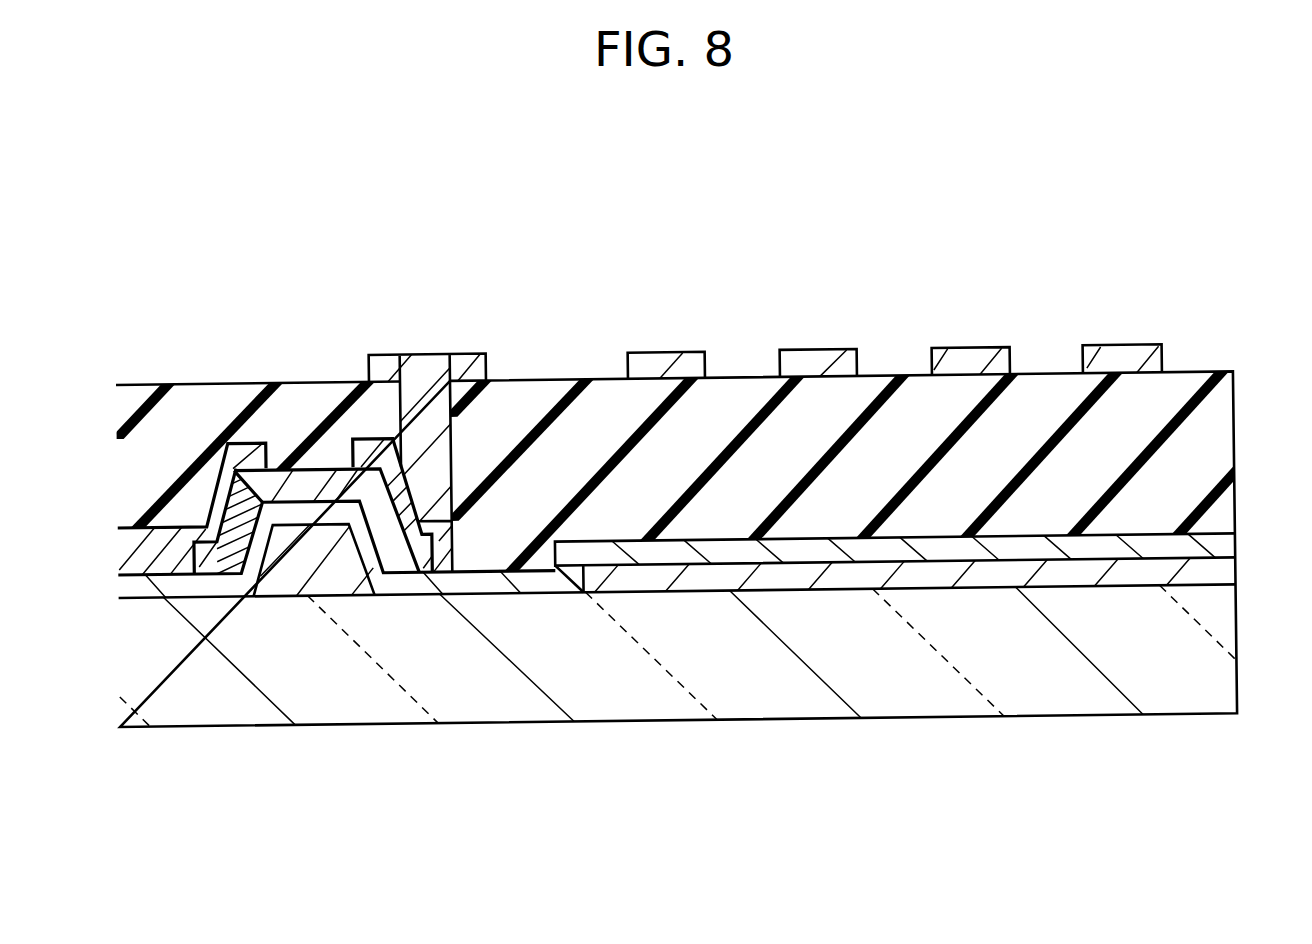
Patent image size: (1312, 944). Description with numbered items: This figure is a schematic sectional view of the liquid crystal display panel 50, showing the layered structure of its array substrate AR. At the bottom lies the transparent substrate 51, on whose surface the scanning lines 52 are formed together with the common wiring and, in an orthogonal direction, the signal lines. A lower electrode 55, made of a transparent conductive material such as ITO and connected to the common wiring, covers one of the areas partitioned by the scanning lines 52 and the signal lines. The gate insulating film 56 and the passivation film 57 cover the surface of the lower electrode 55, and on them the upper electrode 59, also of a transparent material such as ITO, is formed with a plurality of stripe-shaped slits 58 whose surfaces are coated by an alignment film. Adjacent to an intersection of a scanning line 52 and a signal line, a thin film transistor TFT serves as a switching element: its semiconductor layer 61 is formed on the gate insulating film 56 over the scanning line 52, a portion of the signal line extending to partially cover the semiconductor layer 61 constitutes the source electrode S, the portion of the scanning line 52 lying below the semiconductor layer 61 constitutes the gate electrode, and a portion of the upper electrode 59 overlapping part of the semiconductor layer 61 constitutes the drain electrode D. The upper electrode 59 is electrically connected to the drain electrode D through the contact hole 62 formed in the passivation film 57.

The liquid crystal display panel 50 is at (556, 141).
The transparent substrate 51 is at (627, 695).
The scanning line 52 is at (320, 583).
The lower electrode 55 is at (781, 580).
The gate insulating film 56 is at (953, 548).
The passivation film 57 is at (1108, 513).
The slit 58 is at (898, 357).
The upper electrode 59 is at (667, 363).
The semiconductor layer 61 is at (316, 484).
The contact hole 62 is at (444, 497).
The source electrode S is at (202, 540).
The drain electrode D is at (447, 558).
The thin film transistor TFT is at (197, 809).
The array substrate AR is at (1233, 718).